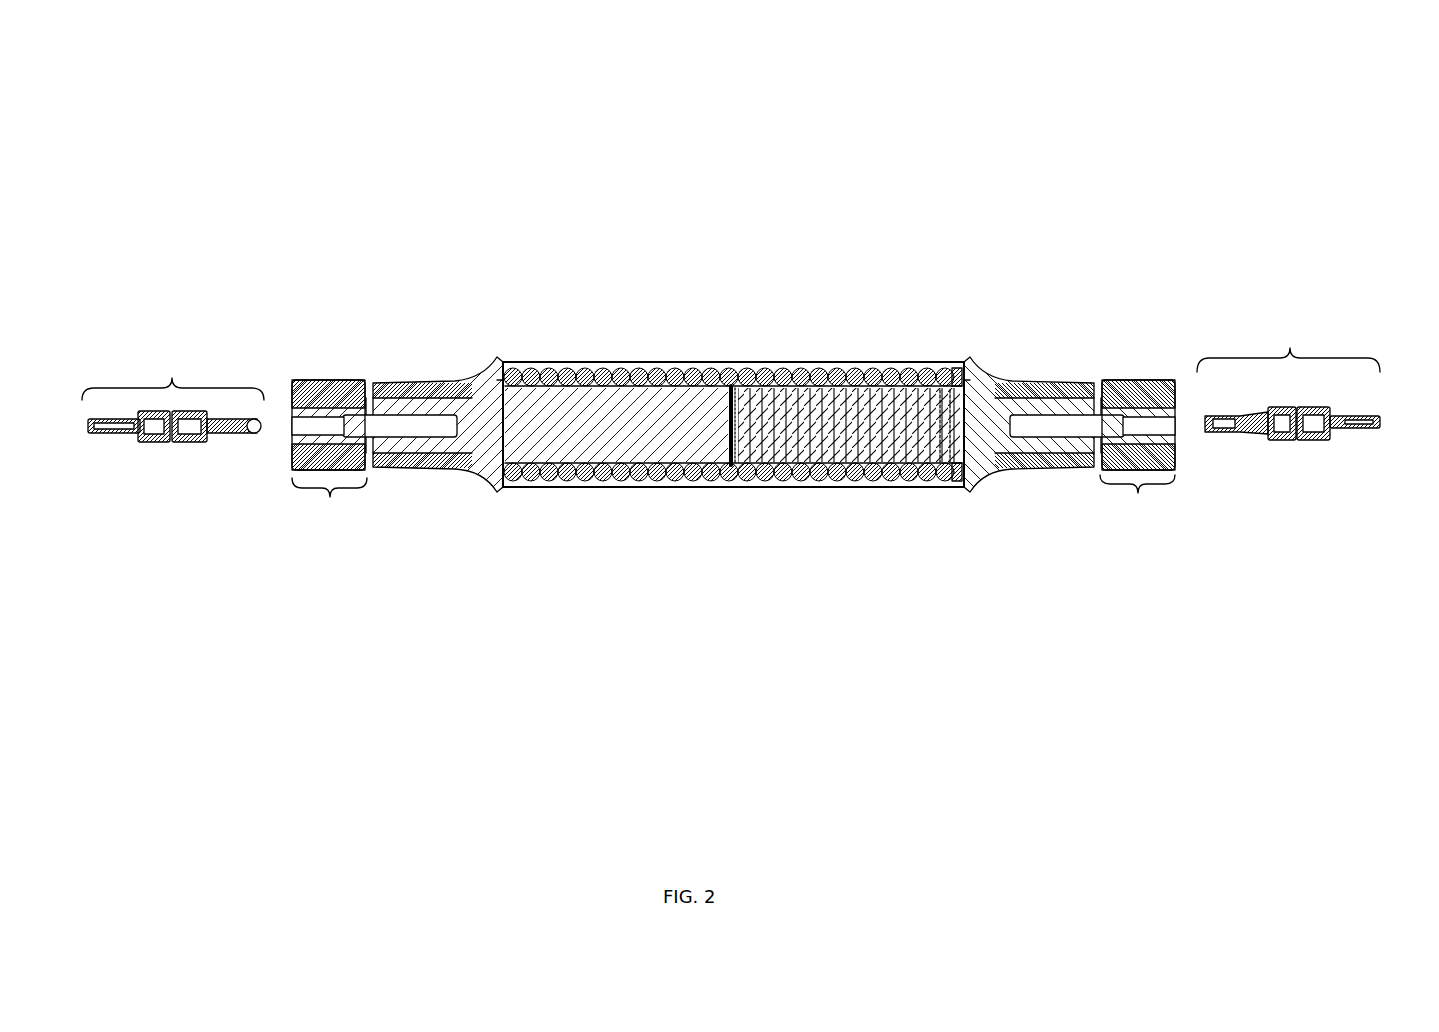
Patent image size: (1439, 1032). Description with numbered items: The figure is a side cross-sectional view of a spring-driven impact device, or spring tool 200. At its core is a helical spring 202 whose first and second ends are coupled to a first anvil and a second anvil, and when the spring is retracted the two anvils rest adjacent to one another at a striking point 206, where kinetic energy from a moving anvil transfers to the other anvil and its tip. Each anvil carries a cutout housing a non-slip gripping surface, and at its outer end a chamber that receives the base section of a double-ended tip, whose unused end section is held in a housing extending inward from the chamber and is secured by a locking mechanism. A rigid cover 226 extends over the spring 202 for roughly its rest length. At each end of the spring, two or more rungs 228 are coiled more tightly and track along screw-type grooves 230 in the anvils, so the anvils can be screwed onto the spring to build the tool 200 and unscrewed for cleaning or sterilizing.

The spring-driven impact device 200 is at (172, 78).
The spring 202 is at (697, 478).
The striking point 206 is at (733, 445).
The cover 226 is at (558, 362).
The rungs 228 is at (948, 400).
The grooves 230 is at (943, 400).